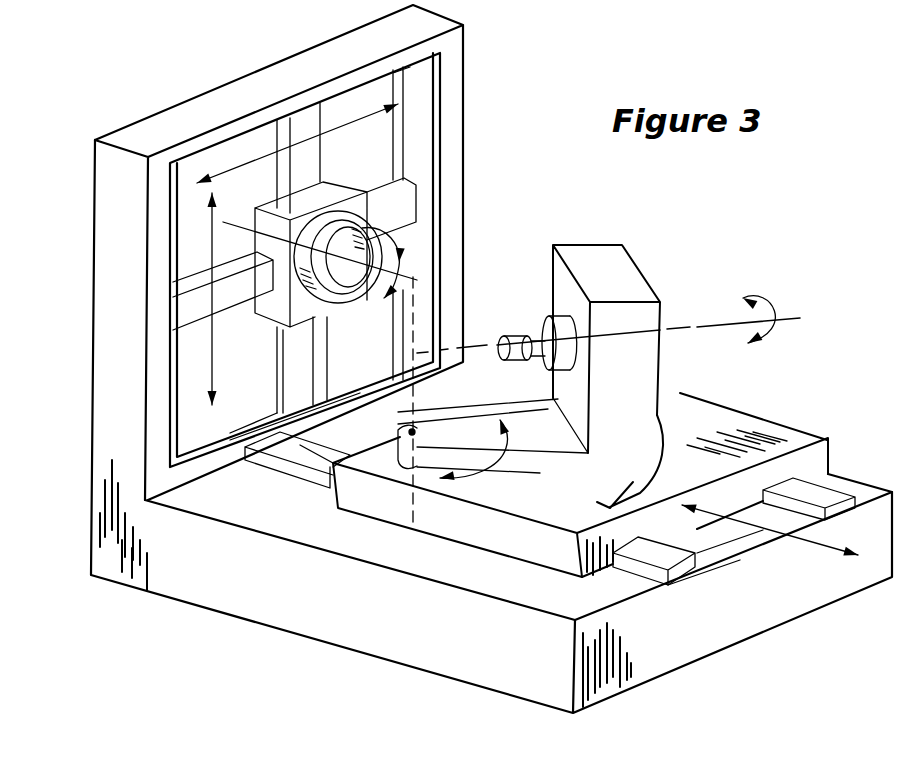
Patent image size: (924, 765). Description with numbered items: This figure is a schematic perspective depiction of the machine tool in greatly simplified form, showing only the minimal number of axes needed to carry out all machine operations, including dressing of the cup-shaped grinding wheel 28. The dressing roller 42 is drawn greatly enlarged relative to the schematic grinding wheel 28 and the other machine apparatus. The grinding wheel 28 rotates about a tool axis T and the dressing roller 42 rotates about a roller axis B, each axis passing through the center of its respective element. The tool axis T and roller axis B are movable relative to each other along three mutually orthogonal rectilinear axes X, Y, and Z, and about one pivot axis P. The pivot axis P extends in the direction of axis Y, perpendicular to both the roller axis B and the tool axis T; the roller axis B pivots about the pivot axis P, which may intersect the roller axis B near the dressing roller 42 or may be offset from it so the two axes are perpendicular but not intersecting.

The grinding wheel 28 is at (338, 268).
The dressing roller 42 is at (512, 337).
The rectilinear axis X is at (360, 121).
The rectilinear axis Y is at (213, 343).
The rectilinear axis Z is at (767, 532).
The tool axis T is at (238, 222).
The roller axis B is at (715, 322).
The pivot axis P is at (407, 432).